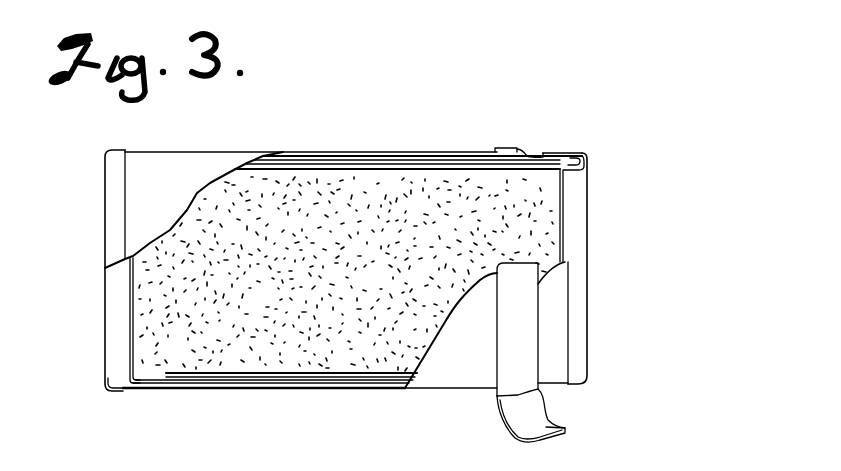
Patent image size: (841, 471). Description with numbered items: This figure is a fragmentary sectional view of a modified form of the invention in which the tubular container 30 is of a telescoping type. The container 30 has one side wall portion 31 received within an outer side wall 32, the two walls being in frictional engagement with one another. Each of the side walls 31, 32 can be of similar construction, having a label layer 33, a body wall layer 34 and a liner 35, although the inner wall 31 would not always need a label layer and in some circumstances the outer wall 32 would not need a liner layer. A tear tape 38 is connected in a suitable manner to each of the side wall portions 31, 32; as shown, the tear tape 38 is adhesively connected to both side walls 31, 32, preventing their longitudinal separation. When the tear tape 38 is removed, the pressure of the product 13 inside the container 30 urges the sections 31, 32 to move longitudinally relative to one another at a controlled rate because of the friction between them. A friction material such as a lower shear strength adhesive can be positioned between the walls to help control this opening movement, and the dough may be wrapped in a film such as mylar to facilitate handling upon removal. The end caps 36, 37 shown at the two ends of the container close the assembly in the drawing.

The tubular container 30 is at (312, 126).
The side wall portion 31 is at (328, 158).
The outer side wall 32 is at (485, 150).
The label layer 33 is at (422, 152).
The body wall layer 34 is at (437, 152).
The liner 35 is at (372, 158).
The left end cap 36 is at (105, 331).
The right end cap 37 is at (587, 168).
The tear tape 38 is at (525, 152).
The product 13 is at (220, 350).